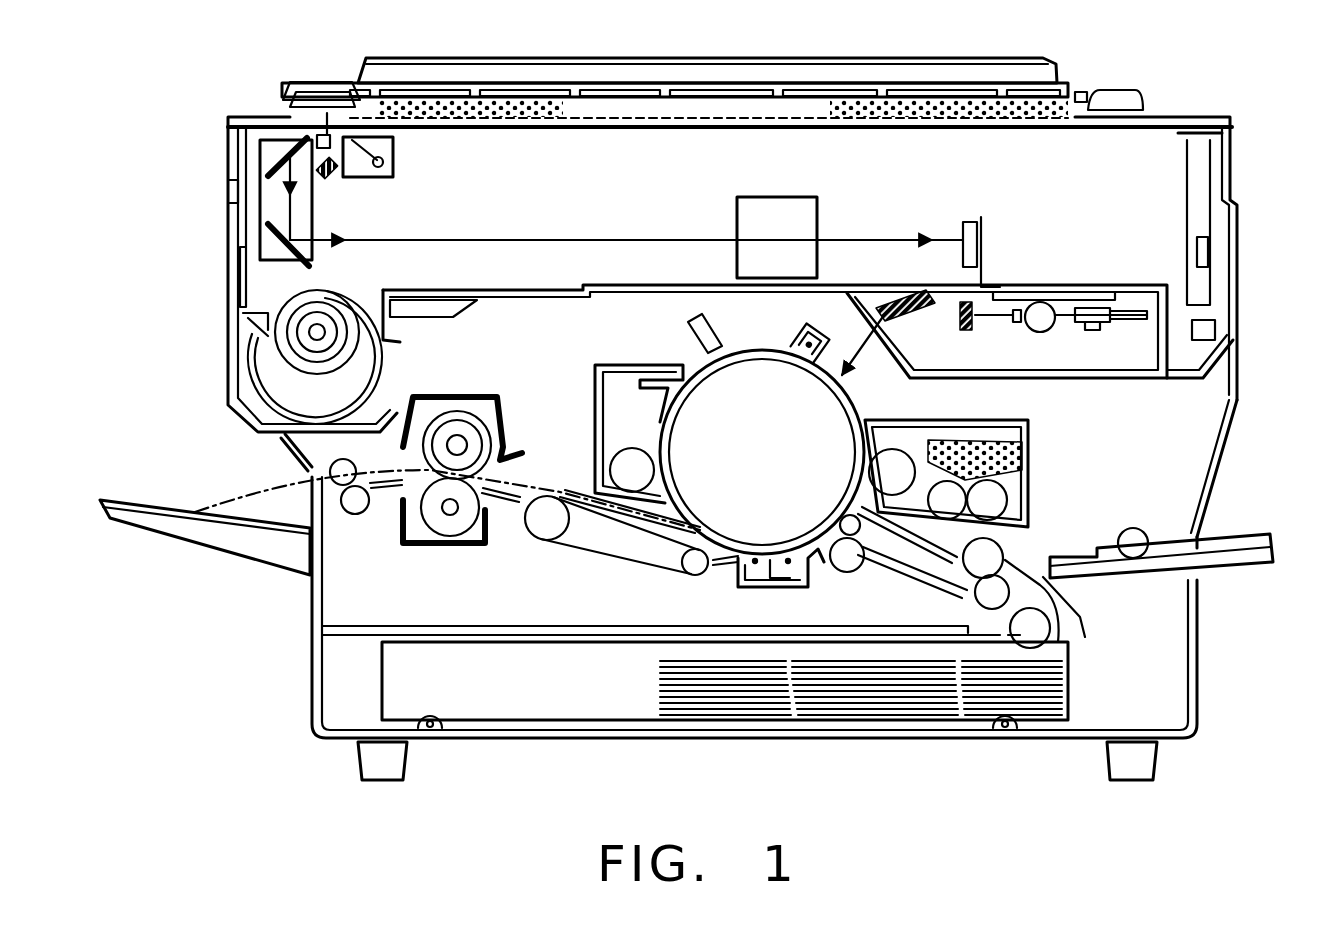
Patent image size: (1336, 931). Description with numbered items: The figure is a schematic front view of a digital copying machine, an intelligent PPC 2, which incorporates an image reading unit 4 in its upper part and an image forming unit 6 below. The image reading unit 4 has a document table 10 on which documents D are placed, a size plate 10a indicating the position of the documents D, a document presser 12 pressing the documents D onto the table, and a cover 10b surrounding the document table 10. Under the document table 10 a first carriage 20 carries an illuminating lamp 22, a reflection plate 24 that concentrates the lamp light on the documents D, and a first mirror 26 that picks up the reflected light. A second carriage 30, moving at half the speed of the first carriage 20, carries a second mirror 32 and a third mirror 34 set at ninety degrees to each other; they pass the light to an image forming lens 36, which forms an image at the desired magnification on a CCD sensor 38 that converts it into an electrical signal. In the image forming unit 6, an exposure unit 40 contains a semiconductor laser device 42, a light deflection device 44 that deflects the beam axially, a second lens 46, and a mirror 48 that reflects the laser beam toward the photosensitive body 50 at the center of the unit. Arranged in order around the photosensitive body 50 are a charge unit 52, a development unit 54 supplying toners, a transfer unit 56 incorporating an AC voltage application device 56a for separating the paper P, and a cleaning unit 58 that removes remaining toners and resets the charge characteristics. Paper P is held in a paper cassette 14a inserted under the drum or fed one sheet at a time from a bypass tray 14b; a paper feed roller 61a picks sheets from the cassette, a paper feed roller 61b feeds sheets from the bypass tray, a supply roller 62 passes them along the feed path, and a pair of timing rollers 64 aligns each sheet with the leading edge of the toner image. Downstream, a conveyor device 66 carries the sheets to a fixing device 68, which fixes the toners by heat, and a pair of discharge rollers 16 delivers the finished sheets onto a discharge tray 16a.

The intelligent PPC 2 is at (1176, 102).
The image reading unit 4 is at (1238, 175).
The image forming unit 6 is at (1240, 402).
The document table 10 is at (680, 130).
The size plate 10a is at (350, 122).
The cover 10b is at (1232, 120).
The document presser 12 is at (893, 58).
The paper cassette 14a is at (918, 685).
The bypass tray 14b is at (1245, 540).
The pair of discharge rollers 16 is at (352, 515).
The discharge tray 16a is at (238, 548).
The first carriage 20 is at (390, 180).
The illuminating lamp 22 is at (397, 170).
The reflection plate 24 is at (398, 156).
The first mirror 26 is at (332, 180).
The second carriage 30 is at (272, 128).
The second mirror 32 is at (264, 160).
The third mirror 34 is at (287, 250).
The image forming lens 36 is at (818, 208).
The CCD sensor 38 is at (984, 238).
The exposure unit 40 is at (1062, 290).
The semiconductor laser device 42 is at (1042, 333).
The light deflection device 44 is at (1125, 320).
The second lens 46 is at (968, 332).
The mirror 48 is at (880, 300).
The photosensitive body 50 is at (745, 352).
The charge unit 52 is at (808, 330).
The development unit 54 is at (1030, 490).
The transfer unit 56 is at (805, 588).
The AC voltage application device 56a is at (748, 582).
The cleaning unit 58 is at (595, 395).
The paper feed roller 61a is at (1048, 630).
The paper feed roller 61b is at (1134, 527).
The supply roller 62 is at (933, 576).
The pair of timing rollers 64 is at (852, 570).
The conveyor device 66 is at (605, 545).
The fixing device 68 is at (470, 395).
The documents D is at (533, 116).
The paper P is at (168, 500).